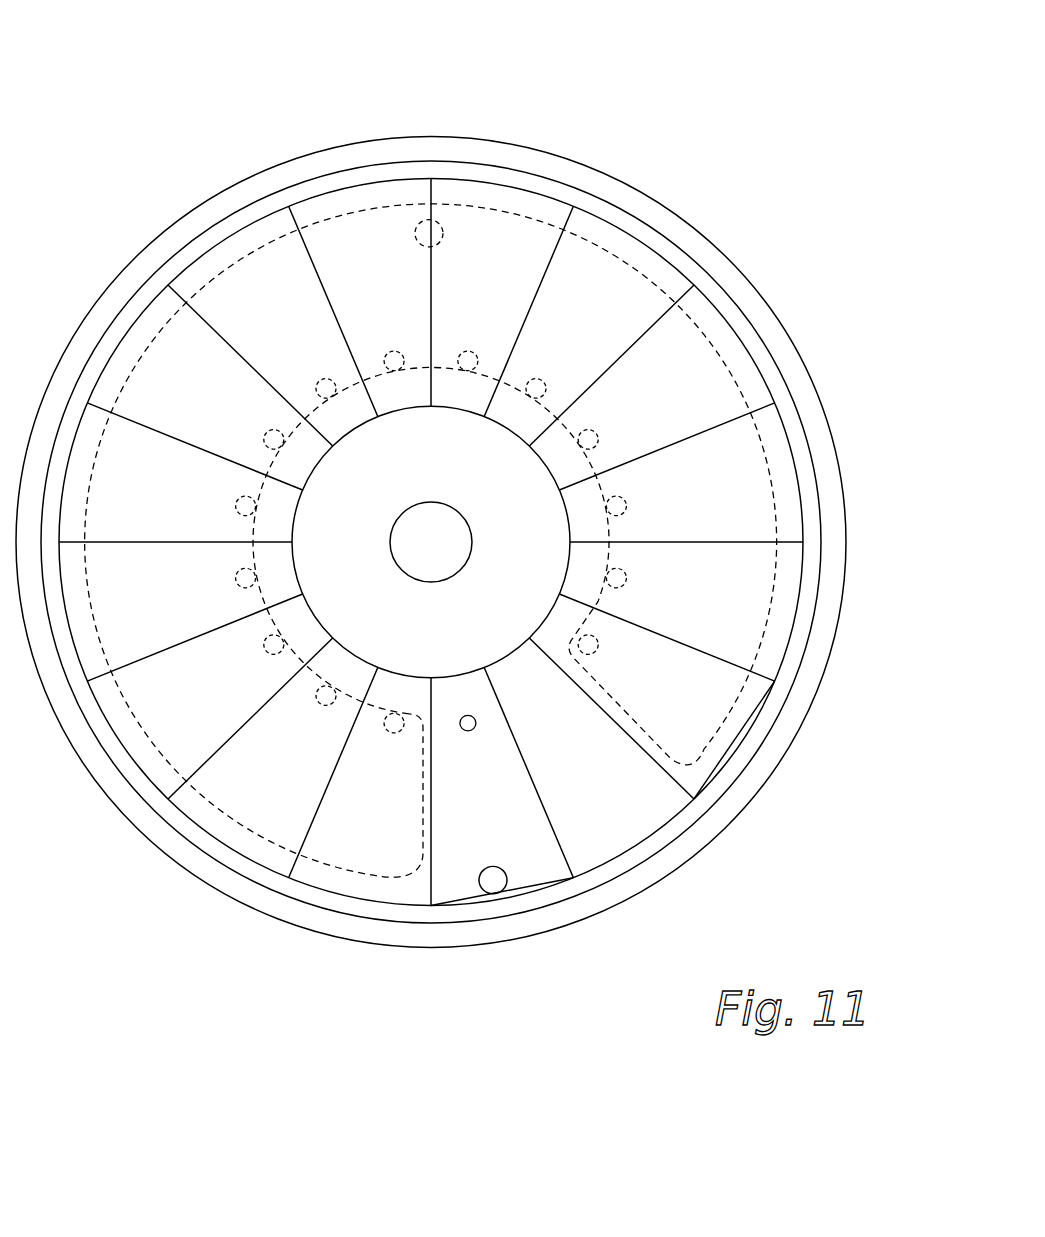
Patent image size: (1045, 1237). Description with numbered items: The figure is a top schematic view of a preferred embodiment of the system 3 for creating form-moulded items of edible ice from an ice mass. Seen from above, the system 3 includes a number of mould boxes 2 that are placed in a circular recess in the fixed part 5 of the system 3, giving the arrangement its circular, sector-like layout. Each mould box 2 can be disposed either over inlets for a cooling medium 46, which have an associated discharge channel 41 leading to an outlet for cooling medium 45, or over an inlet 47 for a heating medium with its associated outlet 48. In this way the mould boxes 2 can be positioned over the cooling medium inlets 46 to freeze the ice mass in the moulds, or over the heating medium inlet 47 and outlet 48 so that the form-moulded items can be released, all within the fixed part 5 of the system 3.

The mould box 2 is at (250, 236).
The system 3 is at (637, 145).
The fixed part 5 is at (148, 254).
The discharge channel 41 is at (517, 228).
The outlet for cooling medium 45 is at (414, 222).
The inlets for a cooling medium 46 is at (254, 504).
The inlet for a heating medium 47 is at (459, 713).
The outlet 48 is at (493, 894).